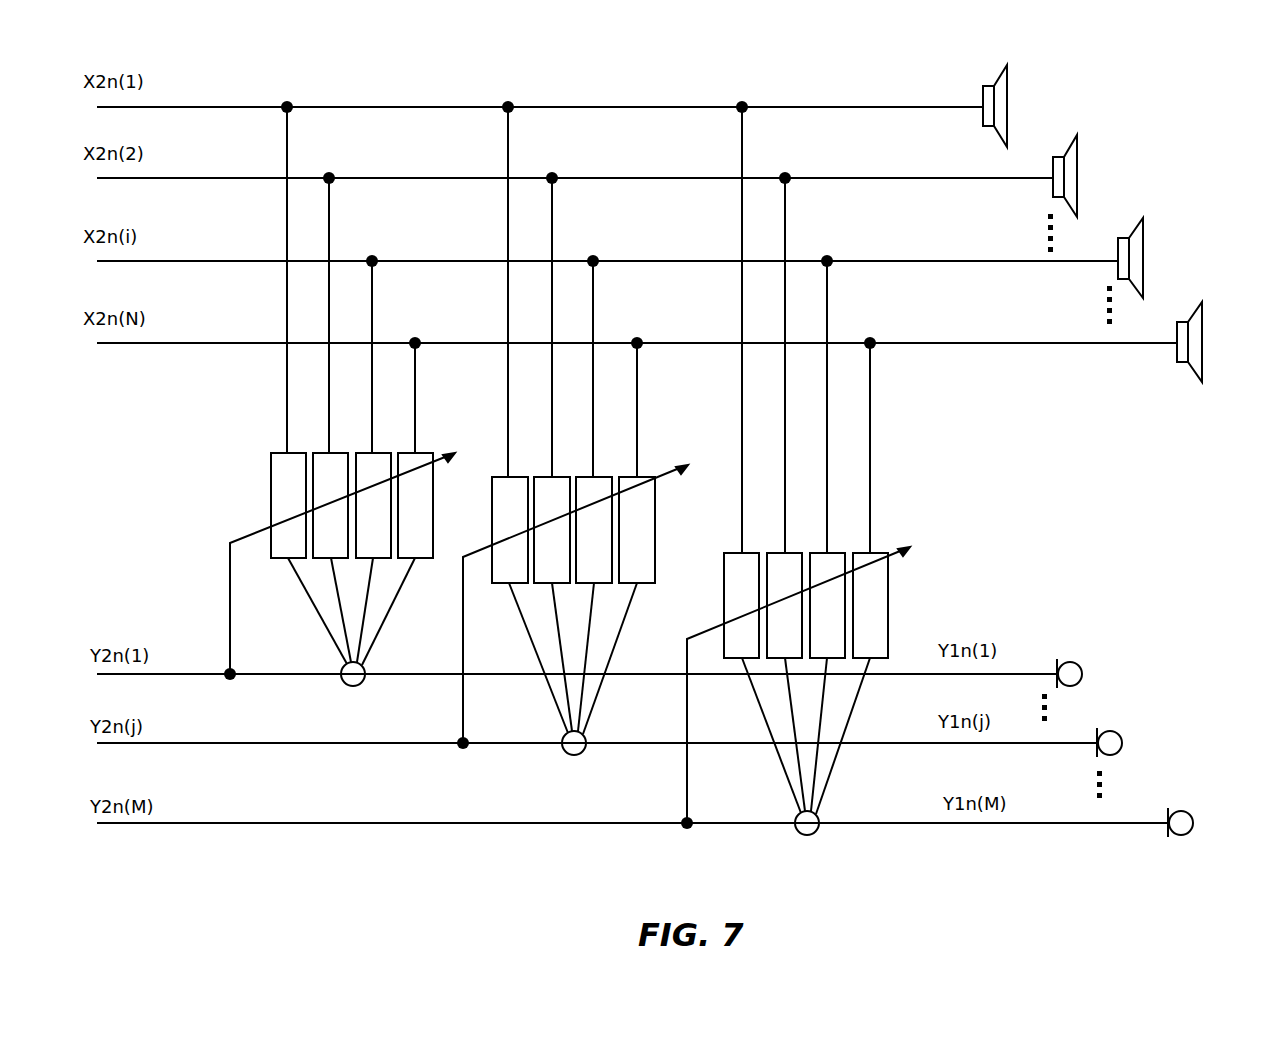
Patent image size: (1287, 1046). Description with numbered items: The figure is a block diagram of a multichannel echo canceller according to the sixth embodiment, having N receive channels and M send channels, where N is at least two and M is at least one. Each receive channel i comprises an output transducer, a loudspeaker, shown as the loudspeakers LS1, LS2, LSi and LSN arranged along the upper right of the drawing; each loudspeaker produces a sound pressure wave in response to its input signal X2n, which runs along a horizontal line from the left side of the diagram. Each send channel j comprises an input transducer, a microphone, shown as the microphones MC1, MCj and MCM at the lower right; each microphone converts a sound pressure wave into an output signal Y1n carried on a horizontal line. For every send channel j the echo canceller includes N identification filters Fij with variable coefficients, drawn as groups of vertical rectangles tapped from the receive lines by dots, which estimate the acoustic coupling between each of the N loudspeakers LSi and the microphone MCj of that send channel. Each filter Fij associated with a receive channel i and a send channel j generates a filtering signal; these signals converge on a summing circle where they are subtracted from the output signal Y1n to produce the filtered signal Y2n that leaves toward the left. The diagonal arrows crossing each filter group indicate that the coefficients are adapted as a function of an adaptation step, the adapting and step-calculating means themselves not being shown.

The loudspeaker LS1 is at (1002, 90).
The loudspeaker LS2 is at (1072, 160).
The loudspeaker LSi is at (1138, 242).
The loudspeaker LSN is at (1196, 326).
The microphone MC1 is at (1070, 686).
The microphone MCj is at (1110, 755).
The microphone MCM is at (1181, 835).
The identification filter Fij is at (597, 547).
The receive channel i is at (875, 260).
The send channel j is at (377, 743).